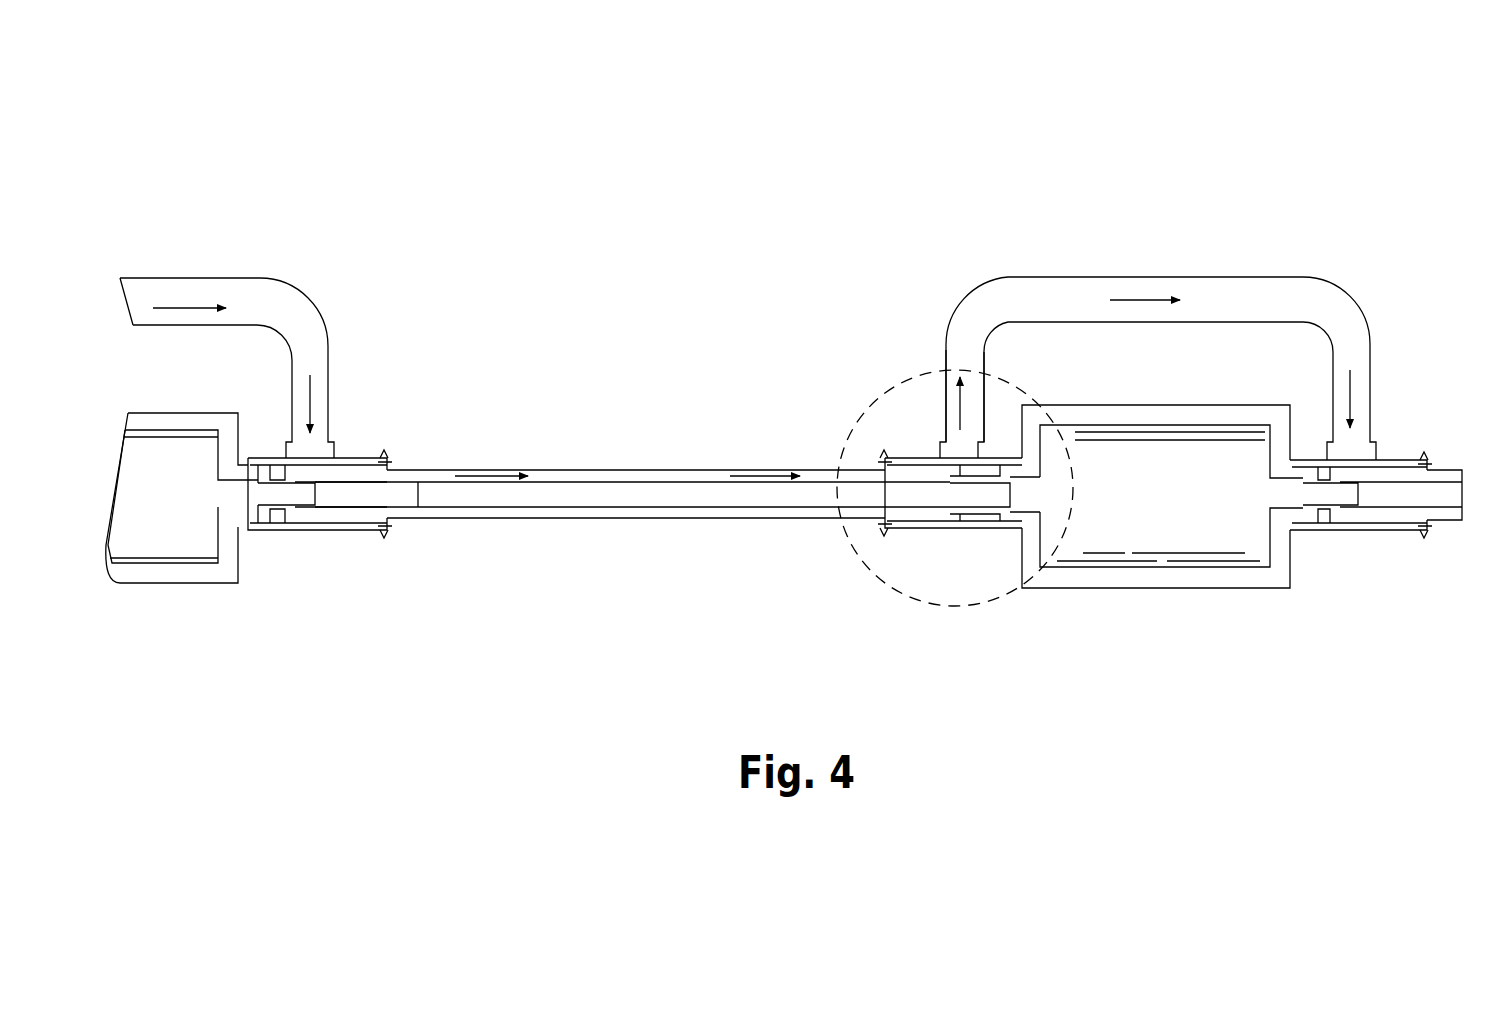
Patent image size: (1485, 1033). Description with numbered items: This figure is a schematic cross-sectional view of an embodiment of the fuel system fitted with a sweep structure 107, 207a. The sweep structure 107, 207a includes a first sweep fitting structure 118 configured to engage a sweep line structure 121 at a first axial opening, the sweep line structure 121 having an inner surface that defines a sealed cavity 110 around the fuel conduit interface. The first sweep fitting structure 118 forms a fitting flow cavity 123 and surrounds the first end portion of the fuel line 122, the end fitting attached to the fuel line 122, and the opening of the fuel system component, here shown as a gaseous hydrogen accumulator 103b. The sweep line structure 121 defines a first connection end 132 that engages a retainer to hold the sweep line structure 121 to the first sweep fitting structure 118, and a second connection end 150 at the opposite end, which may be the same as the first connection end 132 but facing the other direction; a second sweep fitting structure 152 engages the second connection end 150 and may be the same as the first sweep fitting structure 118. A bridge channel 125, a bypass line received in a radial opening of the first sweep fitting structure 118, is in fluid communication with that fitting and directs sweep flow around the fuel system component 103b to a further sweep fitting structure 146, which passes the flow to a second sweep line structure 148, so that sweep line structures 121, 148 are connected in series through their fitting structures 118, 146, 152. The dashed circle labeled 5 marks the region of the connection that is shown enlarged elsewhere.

The sweep structure 107 is at (784, 363).
The sweep structure 207a is at (784, 363).
The bridge channel 125 is at (317, 309).
The cavity 110 is at (632, 495).
The sweep line structure 121 is at (668, 520).
The fuel line 122 is at (556, 509).
The second connection end 150 is at (394, 523).
The second sweep fitting structure 152 is at (328, 530).
The first sweep fitting structure 118 is at (927, 458).
The first connection end 132 is at (893, 522).
The fitting flow cavity 123 is at (922, 515).
The detail circle for Fig. 5 is at (877, 580).
The gaseous hydrogen accumulator 103b is at (1168, 577).
The second sweep fitting structure 146 is at (1359, 534).
The second sweep line structure 148 is at (1450, 478).